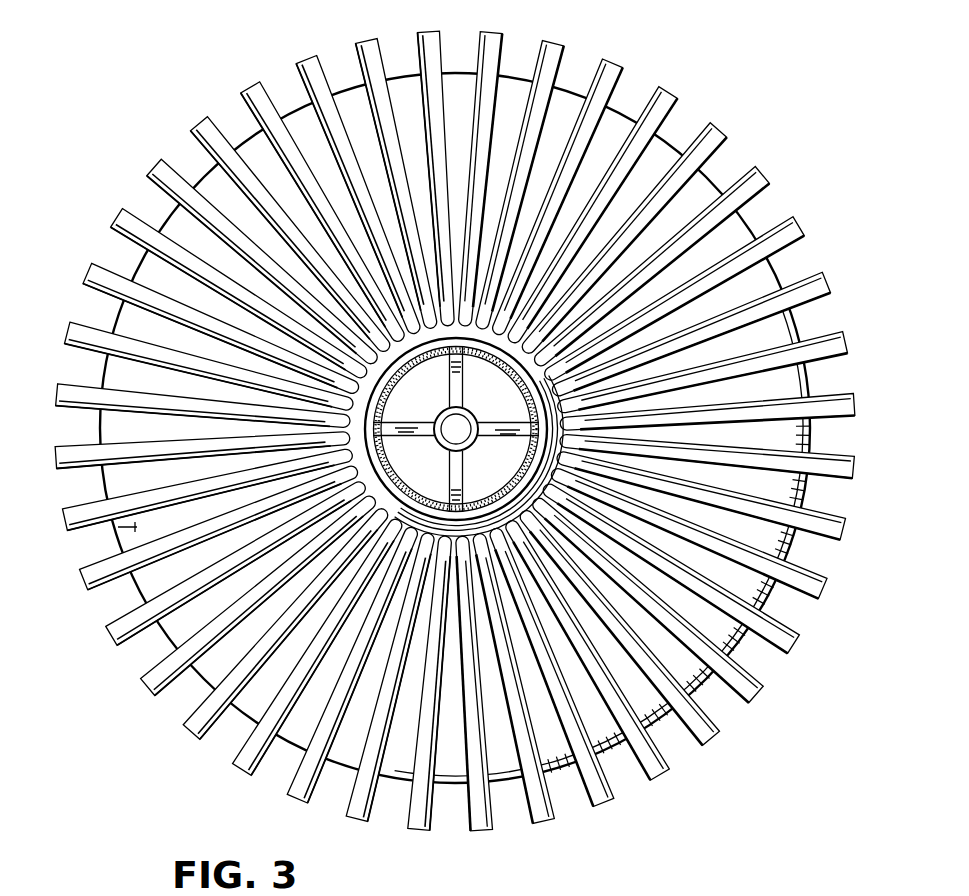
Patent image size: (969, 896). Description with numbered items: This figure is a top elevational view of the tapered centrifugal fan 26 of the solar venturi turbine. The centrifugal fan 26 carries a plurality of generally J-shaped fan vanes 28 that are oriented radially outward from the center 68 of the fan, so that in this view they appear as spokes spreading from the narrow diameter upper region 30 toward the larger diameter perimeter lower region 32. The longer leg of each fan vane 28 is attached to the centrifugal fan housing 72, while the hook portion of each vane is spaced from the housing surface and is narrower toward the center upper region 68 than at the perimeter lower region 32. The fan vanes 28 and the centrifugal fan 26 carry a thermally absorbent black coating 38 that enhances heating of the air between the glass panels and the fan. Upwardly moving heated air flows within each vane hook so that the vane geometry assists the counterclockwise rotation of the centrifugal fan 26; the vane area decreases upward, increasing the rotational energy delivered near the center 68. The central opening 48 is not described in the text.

The centrifugal fan 26 is at (146, 776).
The fan vanes 28 is at (704, 744).
The upper region 30 is at (441, 338).
The lower region 32 is at (672, 135).
The thermally absorbent black coating 38 is at (110, 564).
The center bore 48 is at (438, 441).
The center 68 is at (748, 214).
The centrifugal fan housing 72 is at (189, 690).